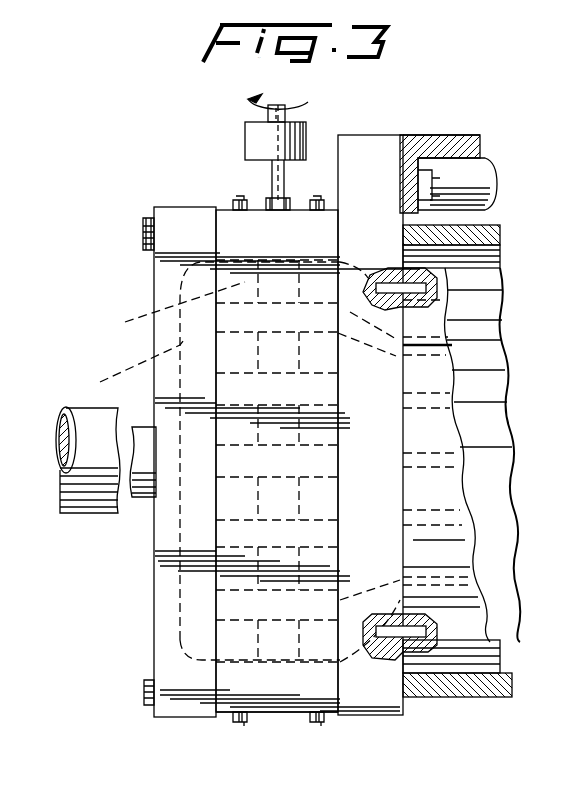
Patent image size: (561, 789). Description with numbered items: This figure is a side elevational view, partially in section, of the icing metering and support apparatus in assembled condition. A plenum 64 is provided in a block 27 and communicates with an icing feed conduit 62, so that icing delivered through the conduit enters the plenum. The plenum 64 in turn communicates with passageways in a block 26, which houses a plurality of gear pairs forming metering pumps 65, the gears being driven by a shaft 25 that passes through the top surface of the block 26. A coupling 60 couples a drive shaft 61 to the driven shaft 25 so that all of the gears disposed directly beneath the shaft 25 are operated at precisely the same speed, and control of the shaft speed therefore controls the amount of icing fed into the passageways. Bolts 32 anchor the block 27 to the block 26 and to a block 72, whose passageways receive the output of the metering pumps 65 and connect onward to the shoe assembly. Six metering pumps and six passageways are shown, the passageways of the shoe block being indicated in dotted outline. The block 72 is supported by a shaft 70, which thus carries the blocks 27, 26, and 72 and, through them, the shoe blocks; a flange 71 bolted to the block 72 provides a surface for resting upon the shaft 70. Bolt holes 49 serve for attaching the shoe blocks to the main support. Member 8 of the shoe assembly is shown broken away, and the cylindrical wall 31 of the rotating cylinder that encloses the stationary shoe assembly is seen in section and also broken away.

The member of shoe assembly 8 is at (445, 438).
The shaft 25 is at (272, 174).
The block 26 is at (268, 698).
The block 27 is at (165, 598).
The cylindrical wall 31 is at (480, 234).
The bolts 32 is at (140, 236).
The bolt holes 49 is at (400, 291).
The coupling 60 is at (306, 143).
The drive shaft 61 is at (300, 100).
The icing feed conduit 62 is at (95, 500).
The plenum 64 is at (129, 366).
The metering pumps 65 is at (174, 307).
The shaft 70 is at (472, 164).
The flange 71 is at (425, 141).
The block 72 is at (392, 704).